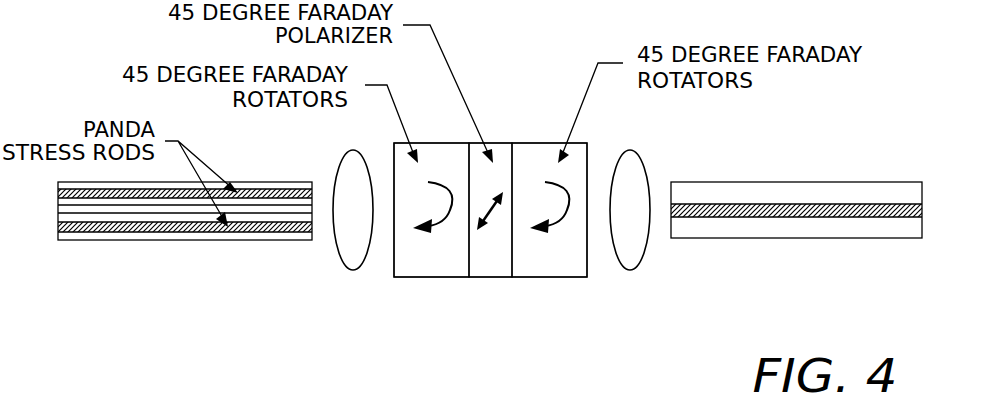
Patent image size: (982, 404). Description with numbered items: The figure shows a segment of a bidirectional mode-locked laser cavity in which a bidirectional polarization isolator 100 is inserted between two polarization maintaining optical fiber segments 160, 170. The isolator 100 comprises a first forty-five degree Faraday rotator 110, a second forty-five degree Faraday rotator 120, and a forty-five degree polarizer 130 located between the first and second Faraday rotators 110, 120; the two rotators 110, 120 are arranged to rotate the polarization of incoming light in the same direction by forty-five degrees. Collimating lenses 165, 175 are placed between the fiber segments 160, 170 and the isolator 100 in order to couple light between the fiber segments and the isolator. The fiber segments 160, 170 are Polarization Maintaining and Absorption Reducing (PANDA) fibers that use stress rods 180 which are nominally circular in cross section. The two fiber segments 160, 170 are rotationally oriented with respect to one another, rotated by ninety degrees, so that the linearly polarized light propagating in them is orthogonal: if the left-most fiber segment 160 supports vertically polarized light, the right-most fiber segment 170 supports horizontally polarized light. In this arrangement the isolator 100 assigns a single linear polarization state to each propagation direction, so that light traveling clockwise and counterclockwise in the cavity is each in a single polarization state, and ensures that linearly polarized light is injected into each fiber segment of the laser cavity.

The bidirectional polarization isolator 100 is at (509, 91).
The first 45 degree Faraday rotator 110 is at (418, 277).
The second 45 degree Faraday rotator 120 is at (549, 277).
The 45 degree polarizer 130 is at (488, 277).
The polarization maintaining optical fiber segment 160 is at (247, 182).
The collimating lens 165 is at (347, 152).
The polarization maintaining optical fiber segment 170 is at (770, 182).
The collimating lens 175 is at (626, 152).
The stress rods 180 is at (100, 192).